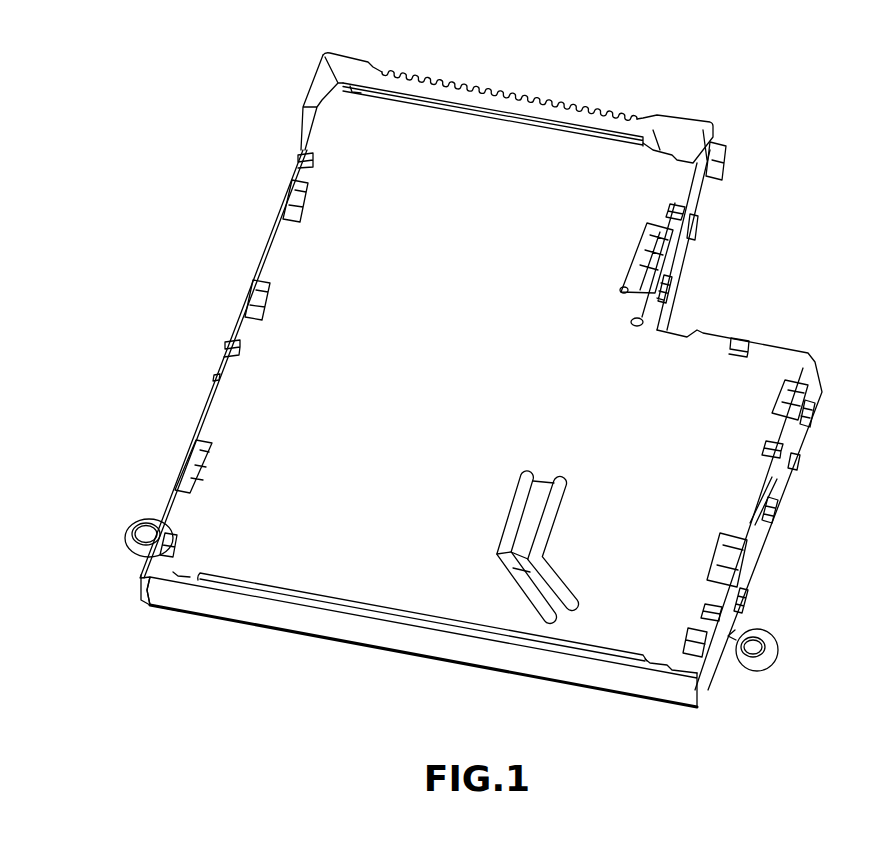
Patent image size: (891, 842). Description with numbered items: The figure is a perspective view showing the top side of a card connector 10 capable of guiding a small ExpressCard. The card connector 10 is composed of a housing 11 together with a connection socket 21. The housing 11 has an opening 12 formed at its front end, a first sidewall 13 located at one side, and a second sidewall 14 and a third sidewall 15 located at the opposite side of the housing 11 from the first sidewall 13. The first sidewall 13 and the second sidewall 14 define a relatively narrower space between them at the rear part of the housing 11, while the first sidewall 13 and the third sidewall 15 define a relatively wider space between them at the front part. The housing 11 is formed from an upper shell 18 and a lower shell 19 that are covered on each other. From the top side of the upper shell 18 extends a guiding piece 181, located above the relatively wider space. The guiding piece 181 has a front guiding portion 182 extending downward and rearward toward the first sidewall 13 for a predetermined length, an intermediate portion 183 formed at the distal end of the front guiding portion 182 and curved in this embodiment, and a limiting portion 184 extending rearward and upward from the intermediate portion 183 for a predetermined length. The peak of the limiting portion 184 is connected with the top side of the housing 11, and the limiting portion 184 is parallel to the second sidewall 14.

The card connector 10 is at (176, 641).
The housing 11 is at (52, 455).
The opening 12 is at (267, 612).
The first sidewall 13 is at (143, 587).
The second sidewall 14 is at (675, 268).
The third sidewall 15 is at (775, 492).
The upper shell 18 is at (178, 497).
The lower shell 19 is at (167, 607).
The connection socket 21 is at (671, 117).
The guiding piece 181 is at (518, 578).
The front guiding portion 182 is at (540, 596).
The intermediate portion 183 is at (495, 555).
The limiting portion 184 is at (517, 515).